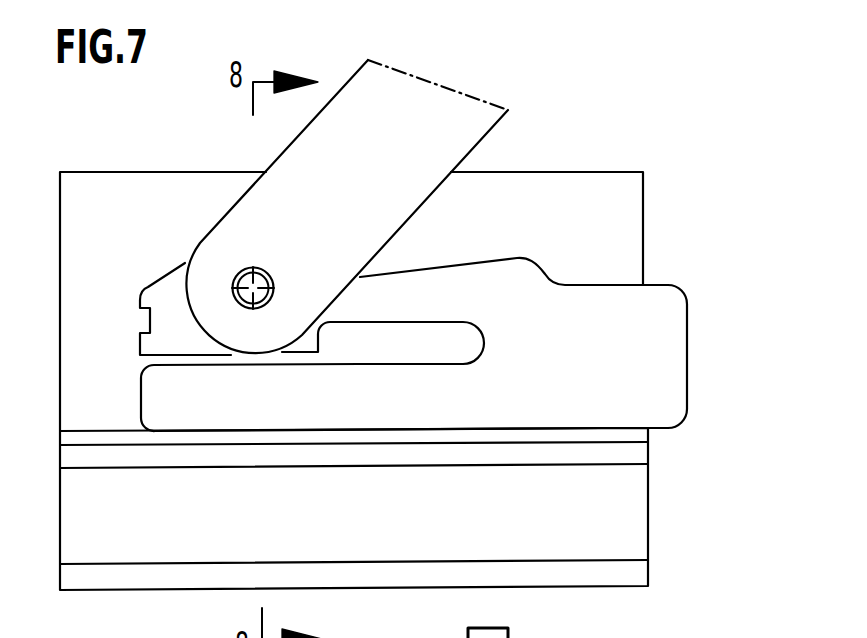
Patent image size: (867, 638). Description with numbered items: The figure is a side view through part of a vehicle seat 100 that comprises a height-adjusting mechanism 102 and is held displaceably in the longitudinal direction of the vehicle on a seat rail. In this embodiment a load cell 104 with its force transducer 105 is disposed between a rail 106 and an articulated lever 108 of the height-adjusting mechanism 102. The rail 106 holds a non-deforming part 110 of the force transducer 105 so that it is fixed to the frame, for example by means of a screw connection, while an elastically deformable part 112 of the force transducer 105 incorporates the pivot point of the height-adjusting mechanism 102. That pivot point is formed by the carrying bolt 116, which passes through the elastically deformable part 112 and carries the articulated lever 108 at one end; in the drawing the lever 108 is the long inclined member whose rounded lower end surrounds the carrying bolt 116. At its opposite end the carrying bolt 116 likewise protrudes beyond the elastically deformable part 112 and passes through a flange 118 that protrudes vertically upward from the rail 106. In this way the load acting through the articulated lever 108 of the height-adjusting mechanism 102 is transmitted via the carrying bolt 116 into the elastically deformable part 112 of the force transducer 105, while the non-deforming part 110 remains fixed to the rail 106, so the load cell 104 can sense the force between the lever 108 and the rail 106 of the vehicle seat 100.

The vehicle seat 100 is at (612, 113).
The height-adjusting mechanism 102 is at (253, 143).
The load cell 104 is at (718, 290).
The force transducer 105 is at (665, 388).
The rail 106 is at (627, 515).
The articulated lever 108 is at (423, 108).
The non-deforming part 110 is at (155, 408).
The elastically deformable part 112 is at (163, 296).
The carrying bolt 116 is at (268, 278).
The flange 118 is at (615, 227).